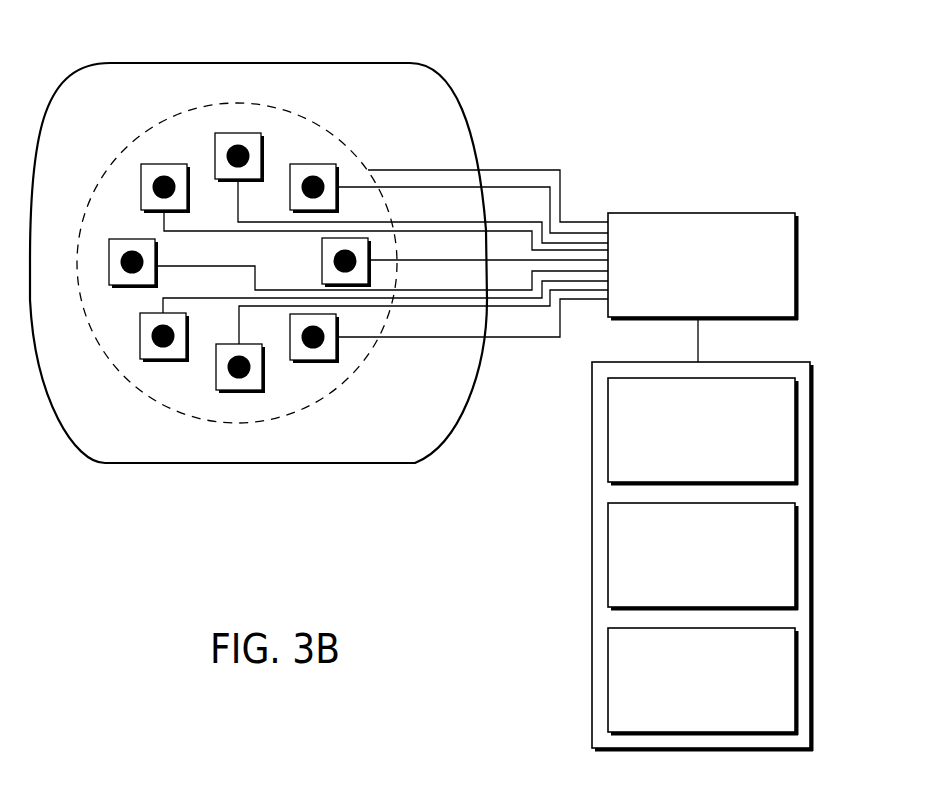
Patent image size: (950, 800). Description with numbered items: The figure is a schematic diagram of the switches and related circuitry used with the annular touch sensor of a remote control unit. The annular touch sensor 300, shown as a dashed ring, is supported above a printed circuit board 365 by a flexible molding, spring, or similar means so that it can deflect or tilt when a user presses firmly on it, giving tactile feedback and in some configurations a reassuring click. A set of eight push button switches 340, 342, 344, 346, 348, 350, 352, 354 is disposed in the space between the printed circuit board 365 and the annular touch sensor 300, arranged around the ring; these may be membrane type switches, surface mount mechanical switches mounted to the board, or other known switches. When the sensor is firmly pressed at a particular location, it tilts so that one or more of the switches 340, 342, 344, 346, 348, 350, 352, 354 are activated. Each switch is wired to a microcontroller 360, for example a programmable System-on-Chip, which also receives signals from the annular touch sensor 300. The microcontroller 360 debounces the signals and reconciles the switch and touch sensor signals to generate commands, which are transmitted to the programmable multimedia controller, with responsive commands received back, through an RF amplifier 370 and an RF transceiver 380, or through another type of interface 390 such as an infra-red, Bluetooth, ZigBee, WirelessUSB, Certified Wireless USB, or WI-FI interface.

The annular touch sensor 300 is at (263, 105).
The push button switch 340 is at (238, 393).
The push button switch 342 is at (312, 363).
The push button switch 344 is at (322, 262).
The push button switch 346 is at (313, 163).
The push button switch 348 is at (237, 133).
The push button switch 350 is at (158, 165).
The push button switch 352 is at (109, 252).
The push button switch 354 is at (153, 360).
The microcontroller 360 is at (678, 301).
The printed circuit board 365 is at (248, 62).
The RF amplifier 370 is at (678, 591).
The RF transceiver 380 is at (678, 464).
The other interface 390 is at (678, 714).